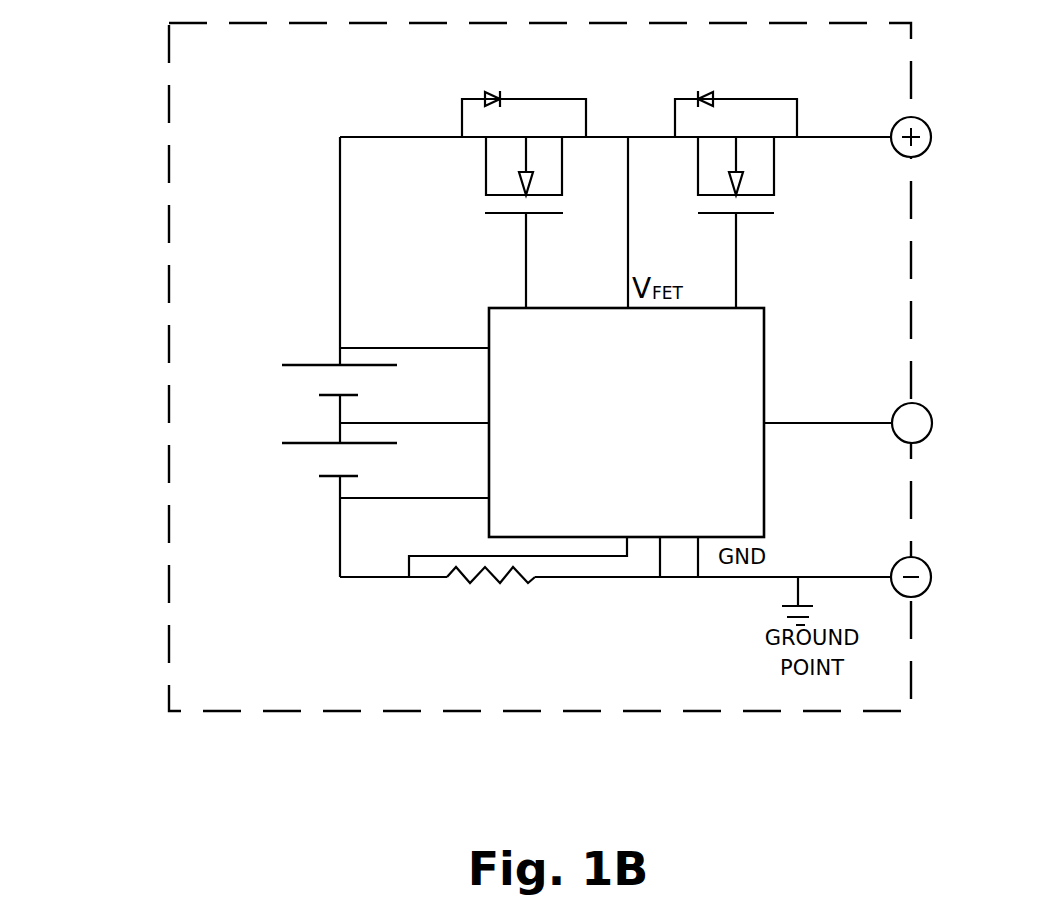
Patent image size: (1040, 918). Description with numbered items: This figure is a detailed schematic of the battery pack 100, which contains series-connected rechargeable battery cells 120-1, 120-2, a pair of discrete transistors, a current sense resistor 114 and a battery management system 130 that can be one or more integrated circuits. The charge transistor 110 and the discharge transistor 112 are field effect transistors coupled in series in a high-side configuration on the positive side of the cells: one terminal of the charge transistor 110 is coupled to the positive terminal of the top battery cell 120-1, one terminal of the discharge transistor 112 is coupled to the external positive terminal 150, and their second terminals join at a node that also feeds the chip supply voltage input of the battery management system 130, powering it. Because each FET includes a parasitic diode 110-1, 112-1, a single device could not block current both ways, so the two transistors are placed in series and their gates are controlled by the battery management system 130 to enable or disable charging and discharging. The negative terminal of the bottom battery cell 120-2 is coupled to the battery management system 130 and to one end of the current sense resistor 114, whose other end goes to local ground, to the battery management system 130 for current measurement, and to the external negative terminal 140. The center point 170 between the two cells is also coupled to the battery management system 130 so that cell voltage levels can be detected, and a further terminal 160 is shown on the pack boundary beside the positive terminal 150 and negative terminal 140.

The battery pack 100 is at (707, 711).
The charge transistor 110 is at (461, 202).
The parasitic diode 110-1 is at (545, 99).
The discharge transistor 112 is at (803, 200).
The parasitic diode 112-1 is at (755, 99).
The current sense resistor 114 is at (467, 580).
The battery cell 120-1 is at (302, 365).
The battery cell 120-2 is at (302, 443).
The battery management system 130 is at (766, 342).
The negative terminal 140 is at (923, 557).
The positive terminal 150 is at (928, 120).
The communication terminal 160 is at (924, 401).
The center point 170 is at (410, 422).